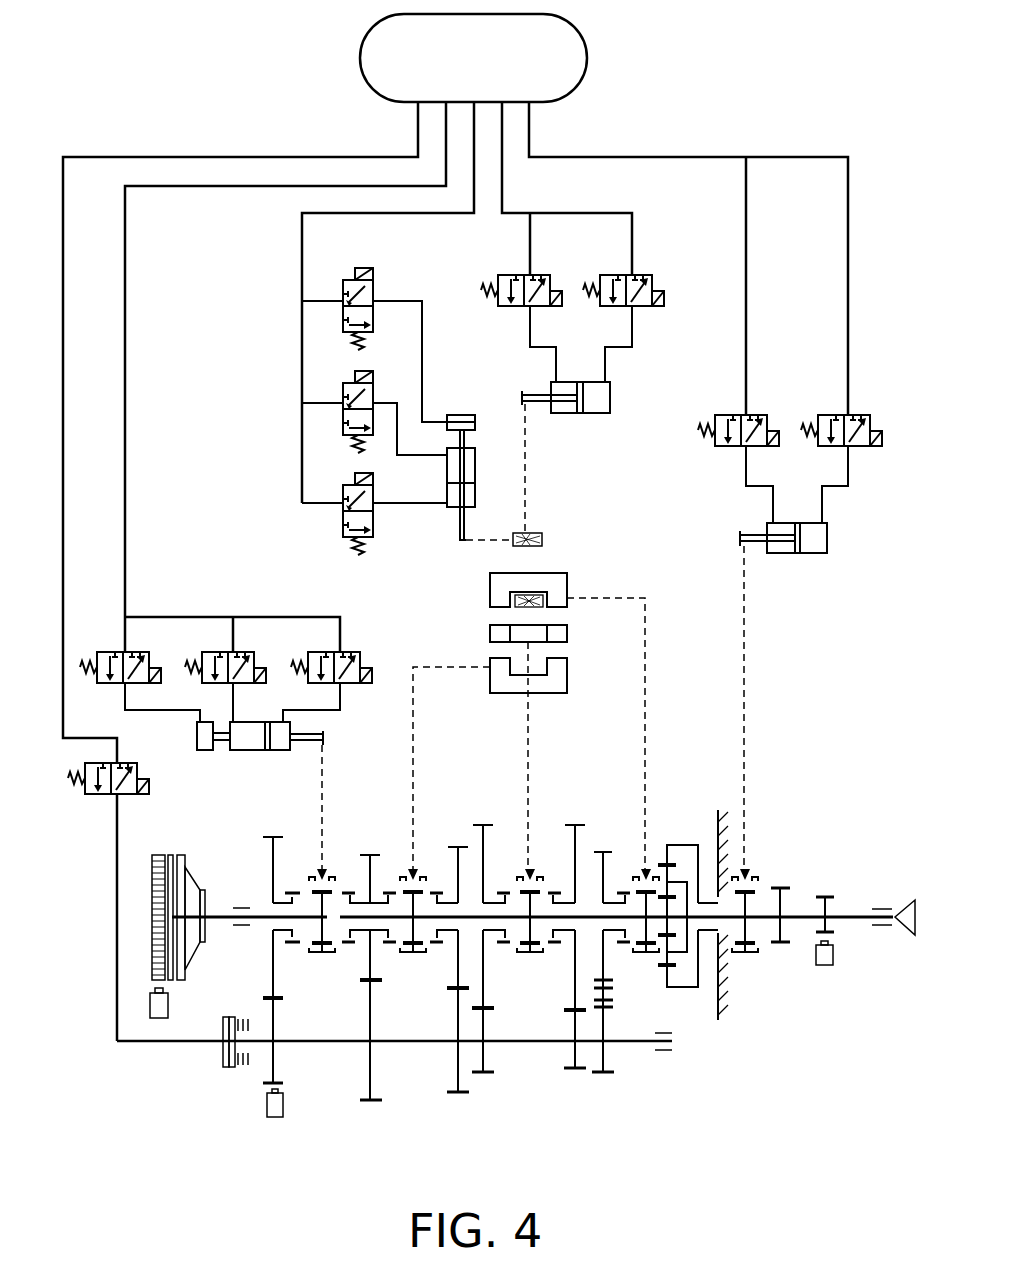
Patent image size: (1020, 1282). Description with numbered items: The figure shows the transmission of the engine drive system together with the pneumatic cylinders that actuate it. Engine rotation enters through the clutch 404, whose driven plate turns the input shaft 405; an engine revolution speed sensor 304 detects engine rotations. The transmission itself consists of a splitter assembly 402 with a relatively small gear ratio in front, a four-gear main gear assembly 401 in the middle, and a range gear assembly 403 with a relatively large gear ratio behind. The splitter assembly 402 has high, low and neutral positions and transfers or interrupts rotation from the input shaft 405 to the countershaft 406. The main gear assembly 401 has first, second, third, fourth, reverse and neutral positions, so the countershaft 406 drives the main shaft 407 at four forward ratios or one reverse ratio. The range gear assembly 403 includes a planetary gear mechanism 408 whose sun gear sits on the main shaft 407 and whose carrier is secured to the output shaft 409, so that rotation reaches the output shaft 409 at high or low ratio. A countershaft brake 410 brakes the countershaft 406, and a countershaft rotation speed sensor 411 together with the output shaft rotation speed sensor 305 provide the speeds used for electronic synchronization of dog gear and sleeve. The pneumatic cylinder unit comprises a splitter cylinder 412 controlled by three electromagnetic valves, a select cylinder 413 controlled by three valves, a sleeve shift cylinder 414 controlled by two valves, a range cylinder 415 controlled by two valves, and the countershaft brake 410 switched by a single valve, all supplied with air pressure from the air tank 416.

The air tank 416 is at (598, 45).
The select cylinder 413 is at (456, 382).
The sleeve shift cylinder 414 is at (635, 428).
The range cylinder 415 is at (844, 574).
The splitter cylinder 412 is at (226, 580).
The clutch 404 is at (196, 836).
The input shaft 405 is at (266, 927).
The engine revolution speed sensor 304 is at (168, 1005).
The countershaft brake 410 is at (232, 1088).
The countershaft rotation speed sensor 411 is at (274, 1118).
The countershaft 406 is at (412, 1044).
The main shaft 407 is at (472, 922).
The splitter assembly 402 is at (352, 826).
The main gear assembly 401 is at (600, 812).
The range gear assembly 403 is at (778, 812).
The planetary gear mechanism 408 is at (680, 990).
The output shaft 409 is at (796, 910).
The output shaft rotation speed sensor 305 is at (825, 966).